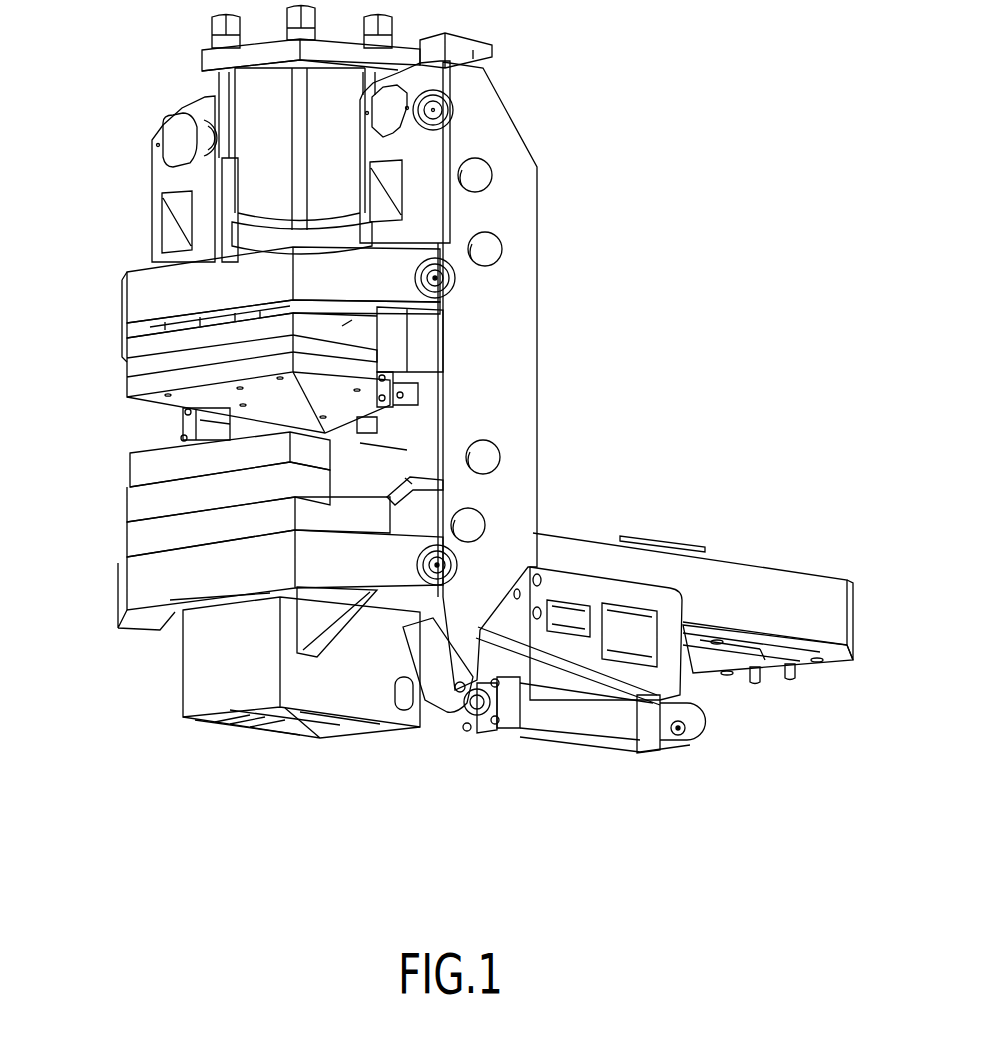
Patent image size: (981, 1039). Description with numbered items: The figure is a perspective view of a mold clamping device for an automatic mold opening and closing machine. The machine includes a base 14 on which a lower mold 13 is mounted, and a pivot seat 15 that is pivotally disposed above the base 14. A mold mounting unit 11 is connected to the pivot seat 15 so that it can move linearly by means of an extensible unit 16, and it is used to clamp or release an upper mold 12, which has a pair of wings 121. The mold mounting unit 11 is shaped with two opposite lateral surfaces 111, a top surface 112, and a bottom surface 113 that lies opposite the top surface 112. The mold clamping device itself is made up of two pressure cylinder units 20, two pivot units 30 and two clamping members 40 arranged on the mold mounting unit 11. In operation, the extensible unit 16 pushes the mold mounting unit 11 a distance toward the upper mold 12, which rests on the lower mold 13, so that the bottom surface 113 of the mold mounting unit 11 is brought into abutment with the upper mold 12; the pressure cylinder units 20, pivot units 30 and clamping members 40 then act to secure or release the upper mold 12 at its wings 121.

The mold mounting unit 11 is at (118, 363).
The lateral surfaces 111 is at (340, 328).
The top surface 112 is at (143, 330).
The bottom surface 113 is at (190, 405).
The upper mold 12 is at (128, 472).
The lower mold 13 is at (128, 507).
The base 14 is at (137, 585).
The pivot seat 15 is at (150, 280).
The extensible unit 16 is at (258, 122).
The pressure cylinder units 20 is at (440, 341).
The pivot units 30 is at (181, 428).
The clamping members 40 is at (400, 410).
The wings 121 is at (405, 480).